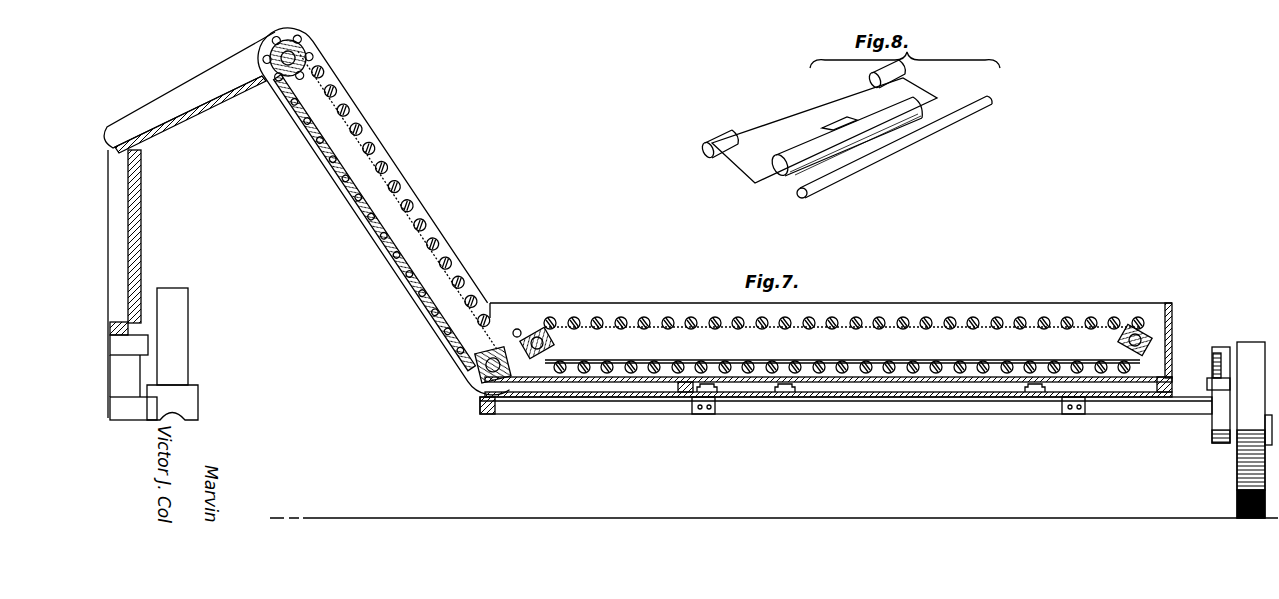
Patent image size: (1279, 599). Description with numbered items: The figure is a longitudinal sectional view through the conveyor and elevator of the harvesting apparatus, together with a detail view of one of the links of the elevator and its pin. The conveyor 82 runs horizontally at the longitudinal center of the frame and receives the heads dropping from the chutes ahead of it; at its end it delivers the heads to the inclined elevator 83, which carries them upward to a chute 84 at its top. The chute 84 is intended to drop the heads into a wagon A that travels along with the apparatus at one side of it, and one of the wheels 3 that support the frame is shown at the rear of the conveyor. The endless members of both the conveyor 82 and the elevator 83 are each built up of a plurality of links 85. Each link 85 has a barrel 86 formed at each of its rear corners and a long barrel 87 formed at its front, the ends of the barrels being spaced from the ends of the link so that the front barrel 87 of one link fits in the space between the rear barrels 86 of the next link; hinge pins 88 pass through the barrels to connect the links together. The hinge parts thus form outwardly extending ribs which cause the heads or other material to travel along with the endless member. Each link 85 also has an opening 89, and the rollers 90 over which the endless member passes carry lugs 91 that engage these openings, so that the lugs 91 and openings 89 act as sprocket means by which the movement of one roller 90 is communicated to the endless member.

In FIG. 7, the wagon A is at (133, 265).
In FIG. 7, the chute 84 is at (168, 98).
In FIG. 7, the elevator 83 is at (427, 223).
In FIG. 7, the conveyor 82 is at (840, 360).
In FIG. 7, the link 85 is at (398, 282).
In FIG. 8, the link 85 is at (768, 143).
In FIG. 8, the barrel 86 is at (720, 135).
In FIG. 8, the long barrel 87 is at (863, 130).
In FIG. 7, the hinge pin 88 is at (477, 317).
In FIG. 8, the hinge pin 88 is at (947, 122).
In FIG. 8, the opening 89 is at (838, 123).
In FIG. 7, the roller 90 is at (550, 320).
In FIG. 7, the lug 91 is at (553, 344).
In FIG. 7, the wheel 3 is at (1242, 468).